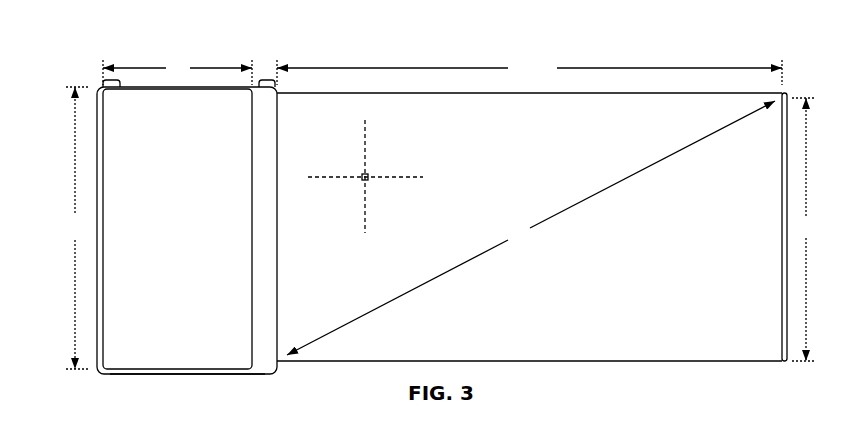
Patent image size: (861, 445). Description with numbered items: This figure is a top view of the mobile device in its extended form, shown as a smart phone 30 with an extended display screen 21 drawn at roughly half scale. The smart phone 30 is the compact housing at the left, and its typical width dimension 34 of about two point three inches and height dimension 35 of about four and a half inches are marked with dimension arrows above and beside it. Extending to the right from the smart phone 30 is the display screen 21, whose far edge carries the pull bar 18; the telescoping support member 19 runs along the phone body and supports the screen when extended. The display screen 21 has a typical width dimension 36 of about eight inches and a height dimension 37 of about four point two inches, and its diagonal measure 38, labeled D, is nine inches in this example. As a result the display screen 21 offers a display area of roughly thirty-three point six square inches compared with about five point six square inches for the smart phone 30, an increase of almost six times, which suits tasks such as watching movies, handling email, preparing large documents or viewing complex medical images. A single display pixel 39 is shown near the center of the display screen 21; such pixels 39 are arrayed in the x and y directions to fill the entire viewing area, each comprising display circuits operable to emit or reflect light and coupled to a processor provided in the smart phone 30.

The pull bar 18 is at (782, 193).
The telescoping support member 19 is at (157, 376).
The display screen 21 is at (606, 381).
The smart phone 30 is at (201, 381).
The width dimension 34 is at (182, 53).
The height dimension 35 is at (65, 222).
The width dimension 36 is at (533, 54).
The height dimension 37 is at (815, 225).
The diagonal measure 38 is at (525, 240).
The display pixel 39 is at (369, 181).